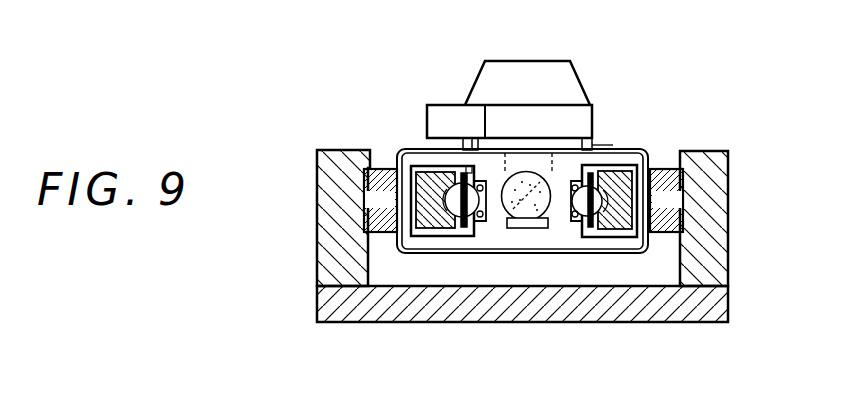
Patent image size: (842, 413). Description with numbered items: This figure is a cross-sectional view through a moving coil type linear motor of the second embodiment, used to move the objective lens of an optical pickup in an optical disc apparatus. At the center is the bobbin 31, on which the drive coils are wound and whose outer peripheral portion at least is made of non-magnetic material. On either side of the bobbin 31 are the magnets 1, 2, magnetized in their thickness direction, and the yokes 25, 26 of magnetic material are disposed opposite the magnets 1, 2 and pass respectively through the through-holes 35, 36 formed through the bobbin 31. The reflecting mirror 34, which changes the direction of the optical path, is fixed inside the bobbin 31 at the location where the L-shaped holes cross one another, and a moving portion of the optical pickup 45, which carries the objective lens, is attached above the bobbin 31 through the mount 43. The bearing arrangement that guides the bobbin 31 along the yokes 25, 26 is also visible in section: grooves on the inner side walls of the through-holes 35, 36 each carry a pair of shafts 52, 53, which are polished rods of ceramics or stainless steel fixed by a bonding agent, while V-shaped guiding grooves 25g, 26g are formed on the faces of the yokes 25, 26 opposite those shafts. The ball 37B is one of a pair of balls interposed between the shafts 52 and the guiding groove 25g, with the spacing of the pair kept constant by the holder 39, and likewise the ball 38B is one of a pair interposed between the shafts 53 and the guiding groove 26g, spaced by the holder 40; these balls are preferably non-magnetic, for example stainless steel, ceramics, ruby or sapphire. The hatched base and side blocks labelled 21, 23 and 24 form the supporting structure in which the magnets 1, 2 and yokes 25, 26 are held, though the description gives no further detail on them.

The magnet 1 is at (378, 169).
The magnet 2 is at (680, 152).
The base plate 21 is at (357, 307).
The left support block 23 is at (332, 236).
The right support block 24 is at (716, 243).
The yoke 25 is at (428, 172).
The guiding groove 25g is at (445, 212).
The yoke 26 is at (650, 172).
The guiding groove 26g is at (622, 238).
The bobbin 31 is at (501, 177).
The reflecting mirror 34 is at (524, 173).
The through-hole 35 is at (474, 165).
The through-hole 36 is at (613, 170).
The ball 37B is at (453, 212).
The ball 38B is at (597, 220).
The holder 39 is at (463, 228).
The holder 40 is at (590, 228).
The mount 43 is at (595, 166).
The optical pickup 45 is at (580, 82).
The shafts 52 is at (489, 207).
The shafts 53 is at (571, 216).